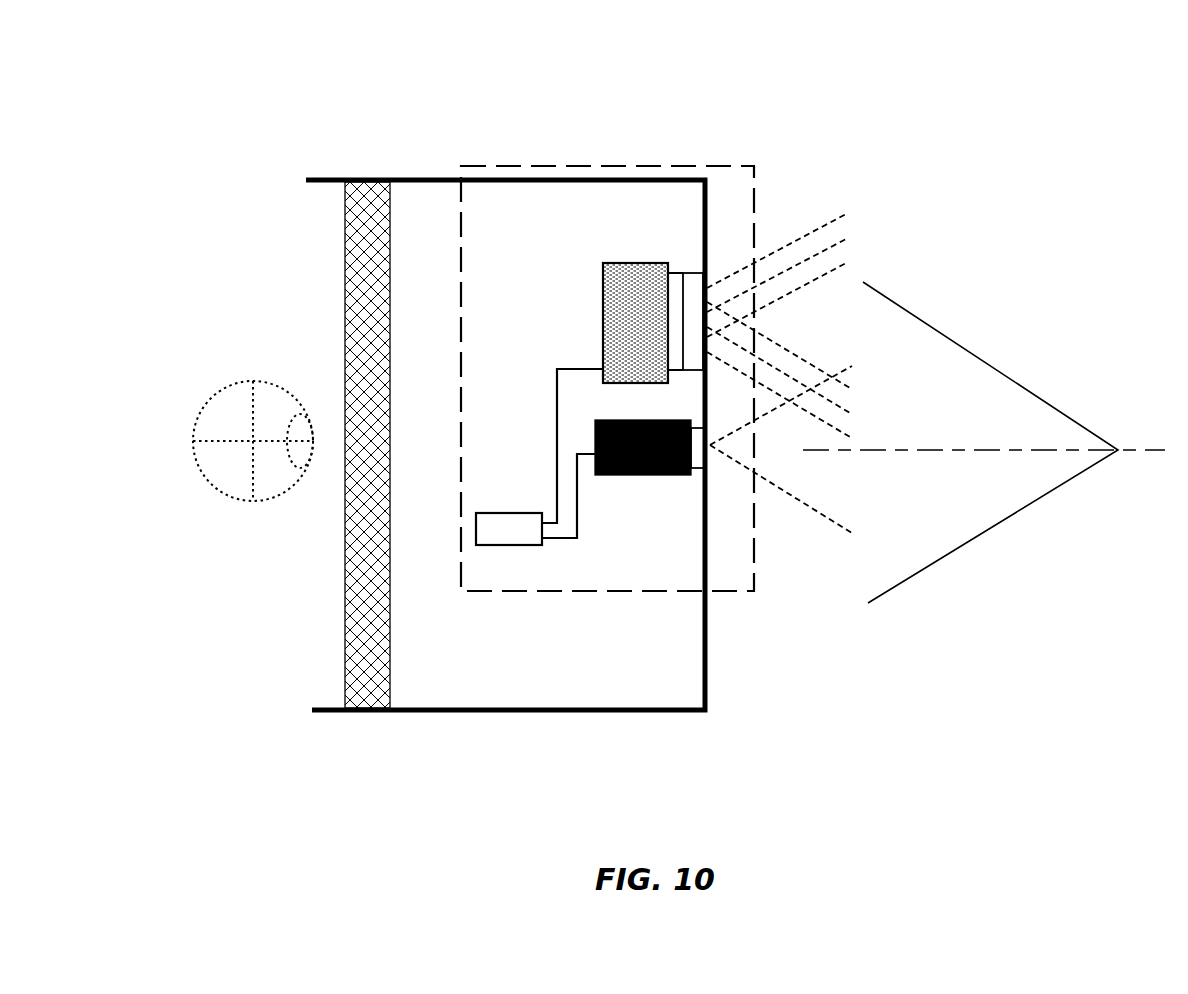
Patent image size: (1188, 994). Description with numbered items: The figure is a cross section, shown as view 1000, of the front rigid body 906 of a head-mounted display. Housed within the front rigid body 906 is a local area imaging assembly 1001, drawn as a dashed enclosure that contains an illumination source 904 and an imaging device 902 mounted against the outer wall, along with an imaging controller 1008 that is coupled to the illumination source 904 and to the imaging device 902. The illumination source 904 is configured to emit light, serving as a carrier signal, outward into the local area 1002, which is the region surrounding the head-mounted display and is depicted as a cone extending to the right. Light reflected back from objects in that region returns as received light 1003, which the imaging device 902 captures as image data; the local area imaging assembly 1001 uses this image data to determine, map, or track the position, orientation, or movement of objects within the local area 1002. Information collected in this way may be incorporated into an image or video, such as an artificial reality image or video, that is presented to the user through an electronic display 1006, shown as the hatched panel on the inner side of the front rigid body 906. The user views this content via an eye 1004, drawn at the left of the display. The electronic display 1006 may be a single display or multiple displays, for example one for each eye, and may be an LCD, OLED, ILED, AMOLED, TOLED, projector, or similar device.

The imaging system 1000 is at (236, 86).
The front rigid body 906 is at (707, 670).
The electronic display 1006 is at (390, 623).
The local area imaging assembly 1001 is at (555, 591).
The illumination source 904 is at (637, 263).
The imaging device 902 is at (612, 477).
The imaging controller 1008 is at (500, 545).
The received light 1003 is at (780, 490).
The local area 1002 is at (965, 543).
The eye 1004 is at (245, 502).